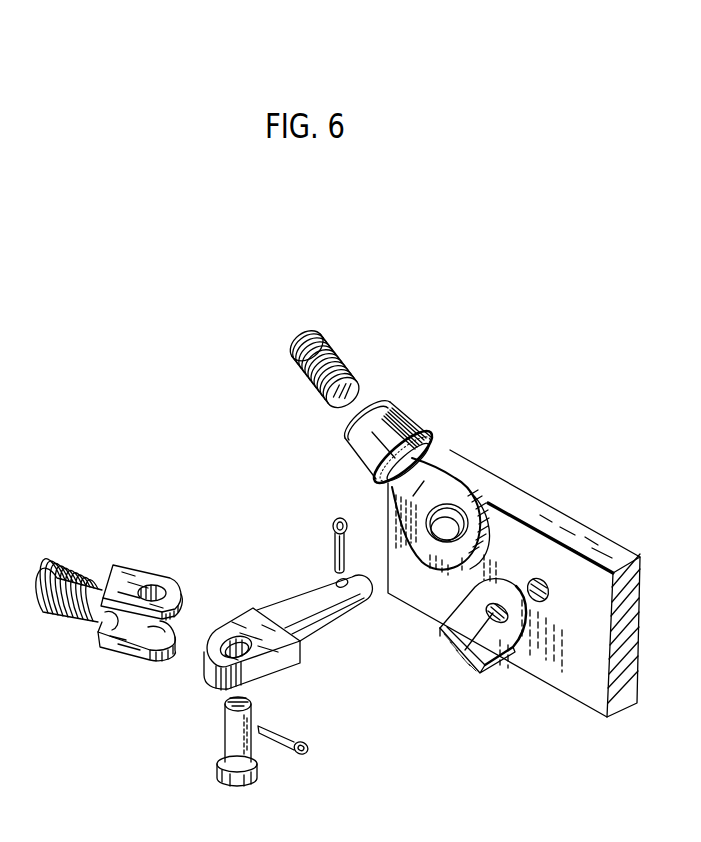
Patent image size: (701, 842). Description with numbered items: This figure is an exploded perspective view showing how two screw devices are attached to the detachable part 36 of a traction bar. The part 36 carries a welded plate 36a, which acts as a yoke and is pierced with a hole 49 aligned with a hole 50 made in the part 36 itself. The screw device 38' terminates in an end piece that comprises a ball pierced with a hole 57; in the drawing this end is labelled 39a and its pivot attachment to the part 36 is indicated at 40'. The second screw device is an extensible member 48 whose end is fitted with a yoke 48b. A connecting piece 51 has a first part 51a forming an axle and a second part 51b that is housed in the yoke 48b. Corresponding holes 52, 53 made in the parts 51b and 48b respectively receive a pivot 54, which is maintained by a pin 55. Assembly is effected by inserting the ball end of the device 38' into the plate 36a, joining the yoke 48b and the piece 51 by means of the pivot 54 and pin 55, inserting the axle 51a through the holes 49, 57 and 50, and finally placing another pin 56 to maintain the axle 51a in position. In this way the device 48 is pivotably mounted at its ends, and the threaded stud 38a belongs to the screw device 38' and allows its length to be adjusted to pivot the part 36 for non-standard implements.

The part of traction bar 36 is at (558, 676).
The welded plate 36a is at (476, 670).
The screw device 38' is at (392, 428).
The threaded stud 38a is at (336, 364).
The eye of rod end 39a is at (490, 505).
The pivot attachment 40' is at (423, 454).
The extensible member 48 is at (129, 622).
The yoke 48b is at (113, 661).
The hole 49 is at (466, 653).
The hole 50 is at (547, 588).
The piece 51 is at (276, 636).
The axle part 51a is at (326, 622).
The second part of piece 51b is at (248, 663).
The hole 52 is at (225, 656).
The hole 53 is at (160, 593).
The pivot 54 is at (226, 736).
The pin 55 is at (303, 753).
The pin 56 is at (336, 556).
The hole 57 is at (450, 542).